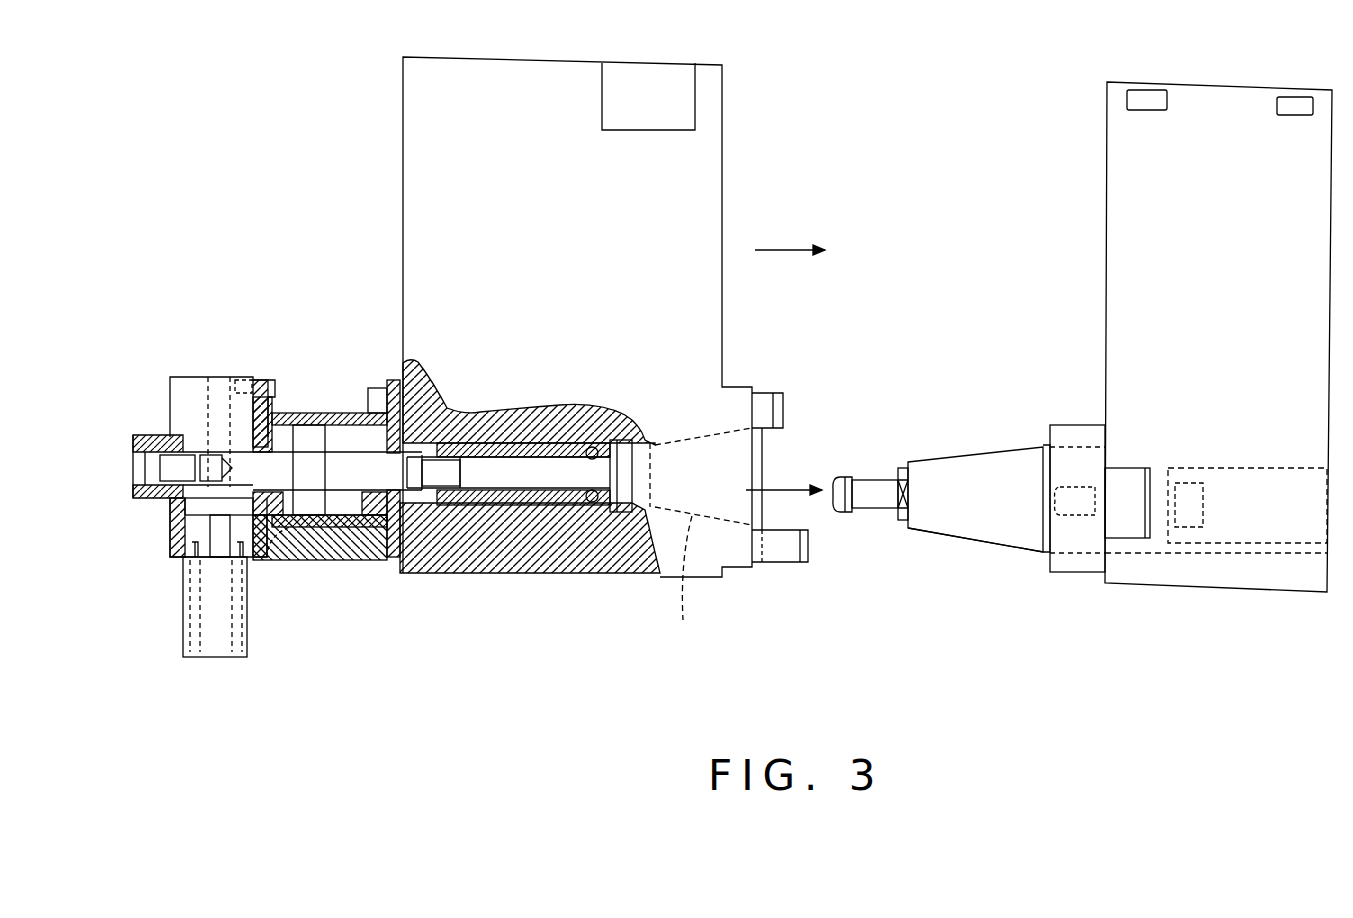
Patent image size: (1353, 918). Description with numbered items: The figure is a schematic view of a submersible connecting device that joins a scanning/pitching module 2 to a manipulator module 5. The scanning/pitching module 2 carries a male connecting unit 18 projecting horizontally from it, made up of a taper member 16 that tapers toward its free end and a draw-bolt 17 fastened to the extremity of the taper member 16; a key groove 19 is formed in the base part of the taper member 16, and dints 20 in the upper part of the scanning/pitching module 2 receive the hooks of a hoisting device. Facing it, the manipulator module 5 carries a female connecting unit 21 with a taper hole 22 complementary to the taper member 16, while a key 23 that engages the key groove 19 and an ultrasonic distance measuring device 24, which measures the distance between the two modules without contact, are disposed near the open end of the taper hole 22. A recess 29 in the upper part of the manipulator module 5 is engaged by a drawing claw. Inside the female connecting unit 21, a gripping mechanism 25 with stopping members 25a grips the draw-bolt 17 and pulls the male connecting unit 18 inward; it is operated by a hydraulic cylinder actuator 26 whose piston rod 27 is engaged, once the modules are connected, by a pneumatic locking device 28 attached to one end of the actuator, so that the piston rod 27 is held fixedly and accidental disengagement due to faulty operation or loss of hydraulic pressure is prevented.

The scanning/pitching module 2 is at (1107, 266).
The manipulator module 5 is at (723, 188).
The taper member 16 is at (982, 453).
The draw-bolt 17 is at (870, 478).
The male connecting unit 18 is at (983, 553).
The key groove 19 is at (1073, 572).
The dints 20 is at (1127, 100).
The female connecting unit 21 is at (556, 575).
The taper hole 22 is at (701, 542).
The key 23 is at (784, 562).
The ultrasonic distance measuring device 24 is at (766, 393).
The gripping mechanism 25 is at (484, 507).
The stopping members 25a is at (595, 447).
The hydraulic cylinder actuator 26 is at (323, 413).
The piston rod 27 is at (243, 465).
The pneumatic locking device 28 is at (286, 545).
The recess 29 is at (690, 97).